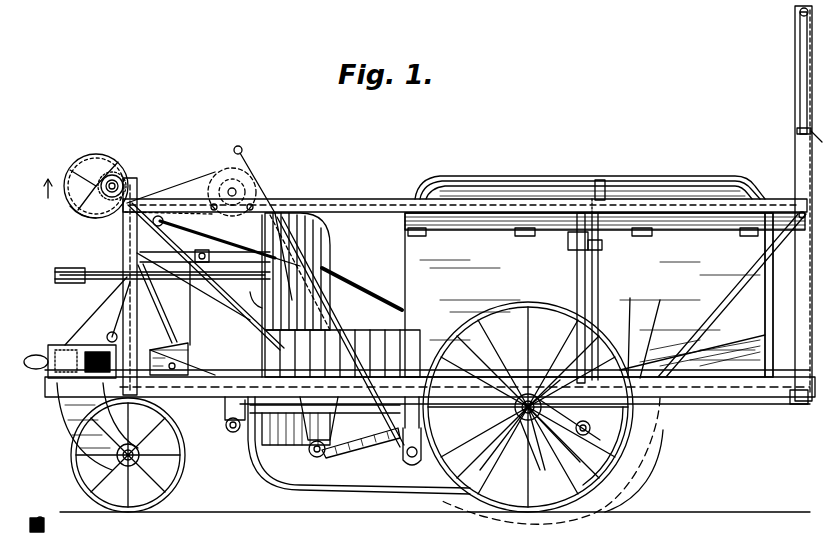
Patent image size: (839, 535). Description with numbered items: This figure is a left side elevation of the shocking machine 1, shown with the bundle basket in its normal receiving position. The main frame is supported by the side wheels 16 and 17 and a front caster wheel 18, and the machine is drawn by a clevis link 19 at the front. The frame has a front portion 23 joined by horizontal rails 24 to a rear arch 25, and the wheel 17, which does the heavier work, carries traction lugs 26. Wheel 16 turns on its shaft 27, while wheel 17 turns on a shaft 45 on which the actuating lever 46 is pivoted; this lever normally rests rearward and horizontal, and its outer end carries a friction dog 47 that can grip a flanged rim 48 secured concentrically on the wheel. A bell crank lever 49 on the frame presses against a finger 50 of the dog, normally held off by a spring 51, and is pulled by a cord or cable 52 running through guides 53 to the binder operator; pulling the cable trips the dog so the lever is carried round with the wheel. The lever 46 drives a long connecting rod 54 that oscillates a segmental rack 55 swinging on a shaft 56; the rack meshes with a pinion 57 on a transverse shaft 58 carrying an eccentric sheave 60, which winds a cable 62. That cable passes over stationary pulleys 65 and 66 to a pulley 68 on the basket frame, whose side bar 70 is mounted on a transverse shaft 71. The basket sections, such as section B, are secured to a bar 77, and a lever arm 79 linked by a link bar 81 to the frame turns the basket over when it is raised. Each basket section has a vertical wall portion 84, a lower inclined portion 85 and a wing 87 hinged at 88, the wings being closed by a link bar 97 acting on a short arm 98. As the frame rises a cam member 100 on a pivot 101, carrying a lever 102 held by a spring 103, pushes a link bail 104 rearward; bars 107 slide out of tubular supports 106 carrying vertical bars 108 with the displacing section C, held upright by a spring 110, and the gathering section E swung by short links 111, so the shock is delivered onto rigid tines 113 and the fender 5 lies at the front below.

The machine 1 is at (812, 132).
The fender 5 is at (134, 412).
The side wheel 16 is at (530, 494).
The side wheel 17 is at (642, 480).
The front caster wheel 18 is at (178, 482).
The clevis link 19 is at (44, 375).
The front portion of the frame 23 is at (138, 192).
The horizontal rails 24 is at (356, 199).
The rear arch 25 is at (797, 132).
The traction lugs 26 is at (668, 452).
The shaft of wheel 16 27 is at (516, 430).
The shaft of wheel 17 45 is at (522, 360).
The actuating lever 46 is at (631, 327).
The friction dog 47 is at (656, 329).
The flanged rim 48 is at (580, 450).
The bell crank lever 49 is at (749, 406).
The finger 50 is at (616, 446).
The spring 51 is at (688, 366).
The cord or cable 52 is at (800, 69).
The guides 53 is at (48, 526).
The connecting rod 54 is at (362, 288).
The segmental rack 55 is at (215, 238).
The shaft 56 is at (107, 335).
The pinion 57 is at (92, 160).
The shaft 58 is at (114, 180).
The sheave 60 is at (70, 210).
The cable 62 is at (185, 195).
The pulley 65 is at (248, 180).
The pulley 66 is at (406, 460).
The pulley 68 is at (540, 430).
The side bar of basket frame 70 is at (250, 436).
The transverse shaft 71 is at (226, 428).
The bar 77 is at (577, 268).
The lever arm 79 is at (592, 428).
The link bar 81 is at (355, 455).
The vertical wall portion 84 is at (760, 272).
The lower inclined portion 85 is at (765, 346).
The wing 87 is at (740, 180).
The hinge 88 is at (520, 236).
The link bar 97 is at (598, 305).
The short arm 98 is at (598, 250).
The cam member 100 is at (212, 397).
The pivot 101 is at (196, 375).
The lever 102 is at (150, 305).
The spring 103 is at (175, 345).
The link bail 104 is at (182, 264).
The tubular supports 106 is at (92, 270).
The bars 107 is at (62, 283).
The vertical bars 108 is at (270, 241).
The spring 110 is at (240, 318).
The short links 111 is at (250, 292).
The rigid tines 113 is at (320, 492).
The basket side section B is at (758, 295).
The displacing section C is at (243, 150).
The gathering section E is at (330, 252).